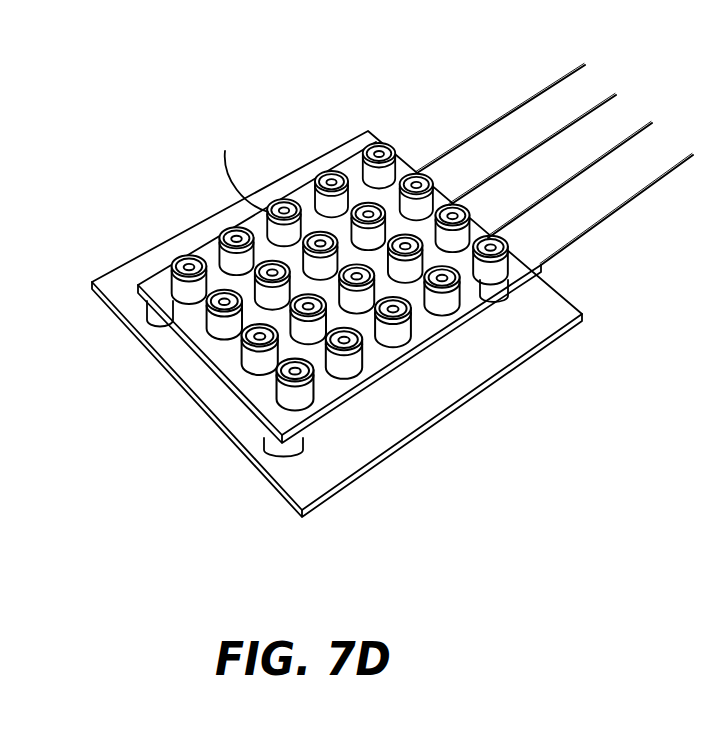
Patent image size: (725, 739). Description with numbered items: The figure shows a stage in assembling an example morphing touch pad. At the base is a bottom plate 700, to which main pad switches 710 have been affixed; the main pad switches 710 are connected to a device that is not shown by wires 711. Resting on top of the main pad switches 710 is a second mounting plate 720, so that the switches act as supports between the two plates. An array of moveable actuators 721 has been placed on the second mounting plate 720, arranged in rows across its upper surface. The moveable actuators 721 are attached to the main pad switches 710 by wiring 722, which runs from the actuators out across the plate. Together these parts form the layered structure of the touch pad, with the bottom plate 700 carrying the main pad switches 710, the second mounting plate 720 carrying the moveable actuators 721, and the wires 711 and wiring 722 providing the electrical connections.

The bottom plate 700 is at (458, 410).
The main pad switches 710 is at (153, 326).
The wires 711 is at (245, 151).
The second mounting plate 720 is at (443, 187).
The moveable actuators 721 is at (418, 176).
The wiring 722 is at (522, 103).